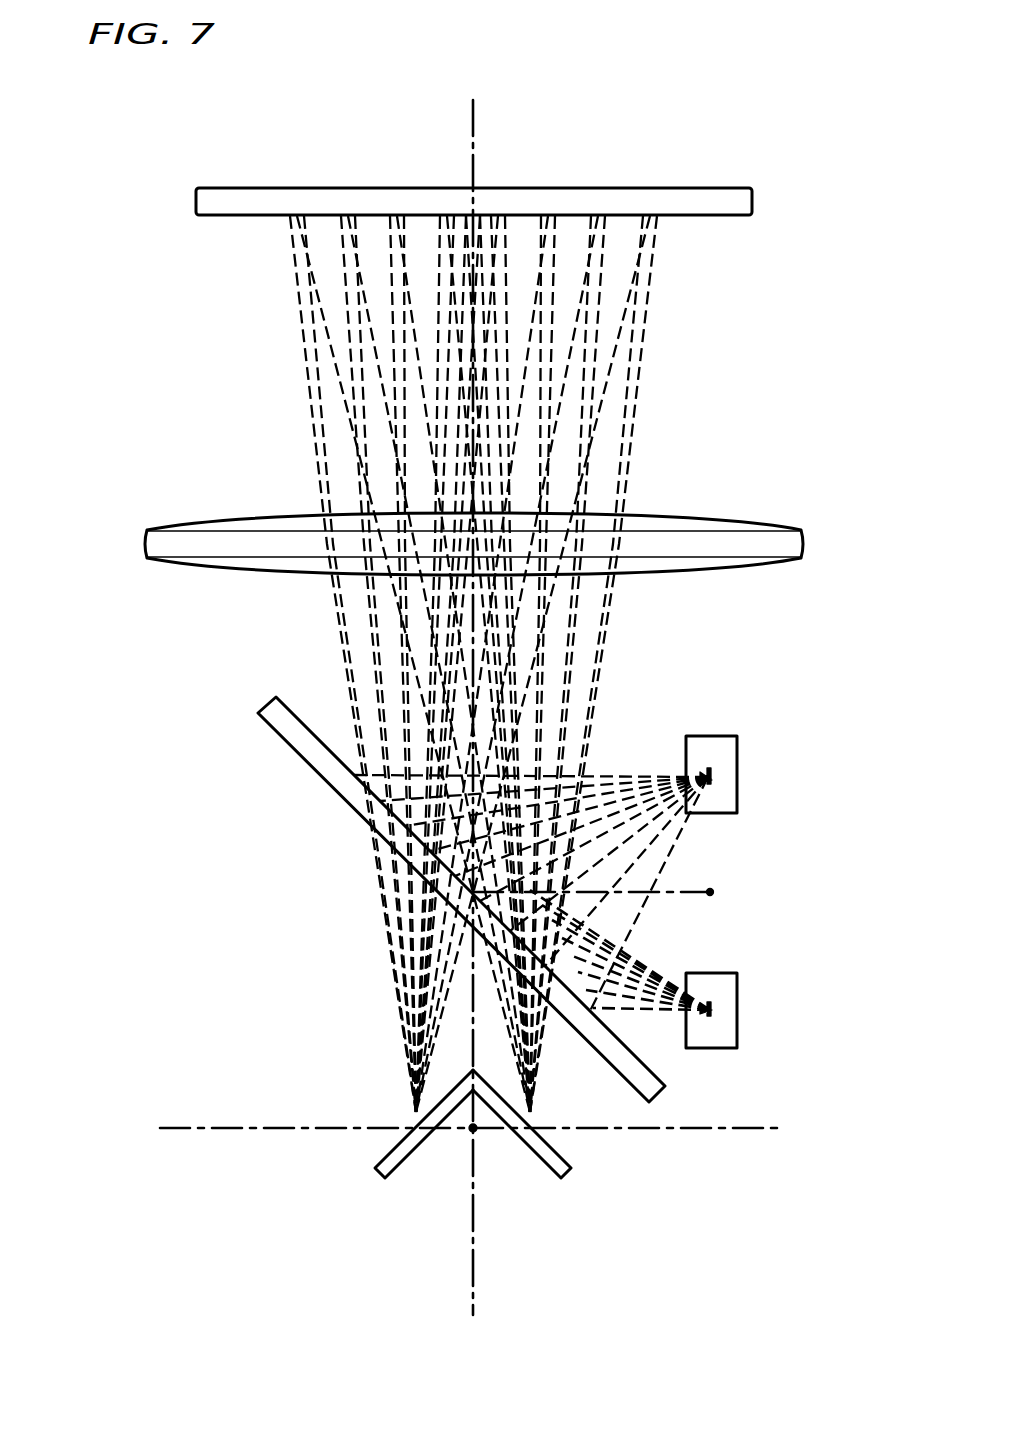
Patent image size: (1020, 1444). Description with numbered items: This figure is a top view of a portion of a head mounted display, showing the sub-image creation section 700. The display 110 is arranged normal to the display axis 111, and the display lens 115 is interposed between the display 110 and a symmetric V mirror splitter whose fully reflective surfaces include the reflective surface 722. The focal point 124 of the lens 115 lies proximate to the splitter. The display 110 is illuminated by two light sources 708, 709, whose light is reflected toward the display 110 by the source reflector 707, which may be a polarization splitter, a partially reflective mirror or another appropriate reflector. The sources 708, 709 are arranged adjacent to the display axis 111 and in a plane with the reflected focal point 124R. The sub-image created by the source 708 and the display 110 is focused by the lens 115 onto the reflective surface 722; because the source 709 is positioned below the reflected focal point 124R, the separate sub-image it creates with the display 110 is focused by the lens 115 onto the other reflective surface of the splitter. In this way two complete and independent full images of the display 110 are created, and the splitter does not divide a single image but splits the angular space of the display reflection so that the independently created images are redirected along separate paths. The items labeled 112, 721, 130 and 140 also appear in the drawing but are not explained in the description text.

The sub-image creation section 700 is at (180, 120).
The display 110 is at (650, 188).
The display axis 111 is at (473, 118).
The optical axis (lower) 112 is at (474, 1288).
The display lens 115 is at (147, 546).
The source reflector 707 is at (390, 845).
The light source 708 is at (737, 1018).
The light source 709 is at (737, 762).
The focal point 124 is at (486, 1134).
The reflected focal point 124R is at (712, 890).
The left mirror facet 721 is at (390, 1182).
The fully reflective surface 722 is at (558, 1182).
The viewing plane (right) 130 is at (724, 1130).
The viewing plane (left) 140 is at (226, 1130).